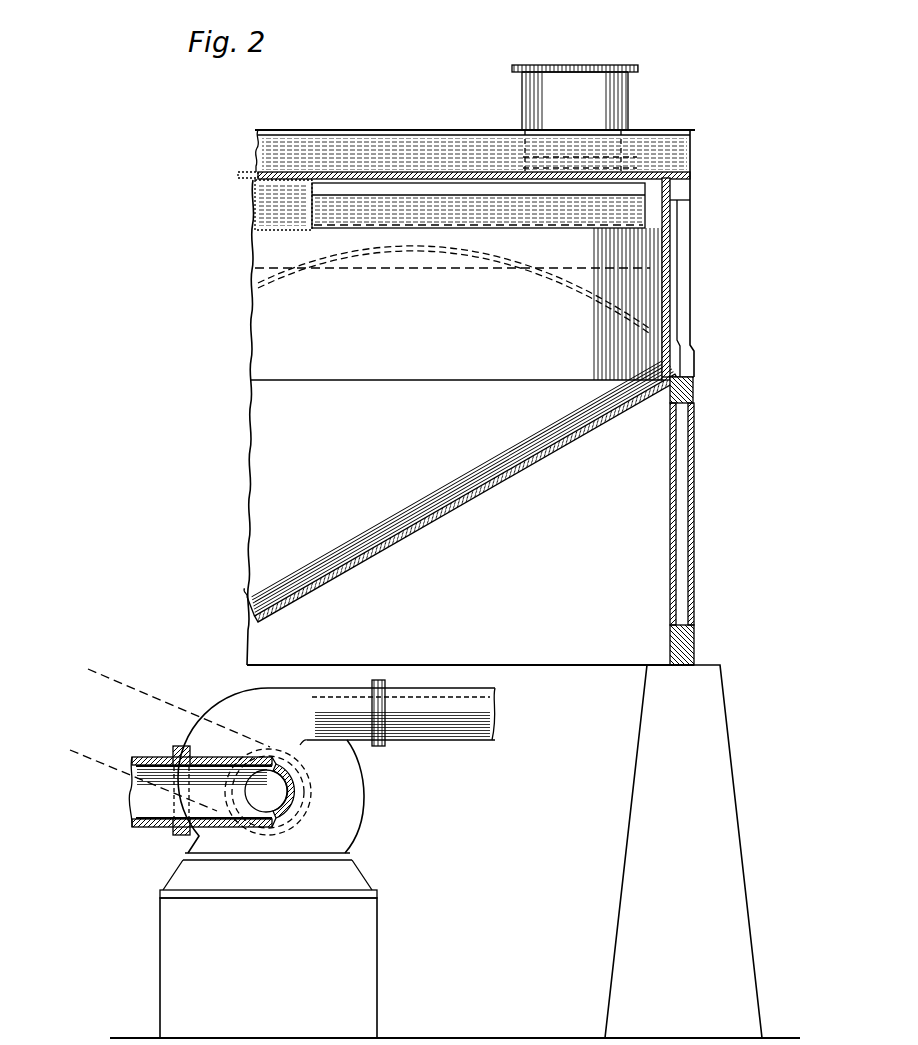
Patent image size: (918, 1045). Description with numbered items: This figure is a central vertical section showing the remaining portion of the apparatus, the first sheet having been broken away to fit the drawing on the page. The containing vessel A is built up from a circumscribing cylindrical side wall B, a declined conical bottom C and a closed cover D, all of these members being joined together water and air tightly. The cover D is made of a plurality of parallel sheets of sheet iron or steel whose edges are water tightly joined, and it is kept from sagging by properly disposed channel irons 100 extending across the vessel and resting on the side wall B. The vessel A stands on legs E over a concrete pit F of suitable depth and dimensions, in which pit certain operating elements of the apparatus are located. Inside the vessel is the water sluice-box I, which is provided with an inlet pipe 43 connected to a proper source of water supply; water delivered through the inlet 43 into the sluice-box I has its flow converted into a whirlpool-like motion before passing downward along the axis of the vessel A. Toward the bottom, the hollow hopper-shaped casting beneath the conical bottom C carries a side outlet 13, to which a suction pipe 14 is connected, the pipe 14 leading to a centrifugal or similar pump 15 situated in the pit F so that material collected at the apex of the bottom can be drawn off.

The channel irons 100 is at (475, 151).
The inlet pipe 43 is at (575, 118).
The side outlet 13 is at (200, 790).
The suction pipe 14 is at (255, 792).
The centrifugal pump 15 is at (381, 713).
The cover D is at (419, 170).
The containing vessel A is at (699, 247).
The sluice-box I is at (478, 205).
The cylindrical side wall B is at (598, 304).
The conical bottom C is at (459, 485).
The legs E is at (699, 534).
The concrete pit F is at (455, 851).